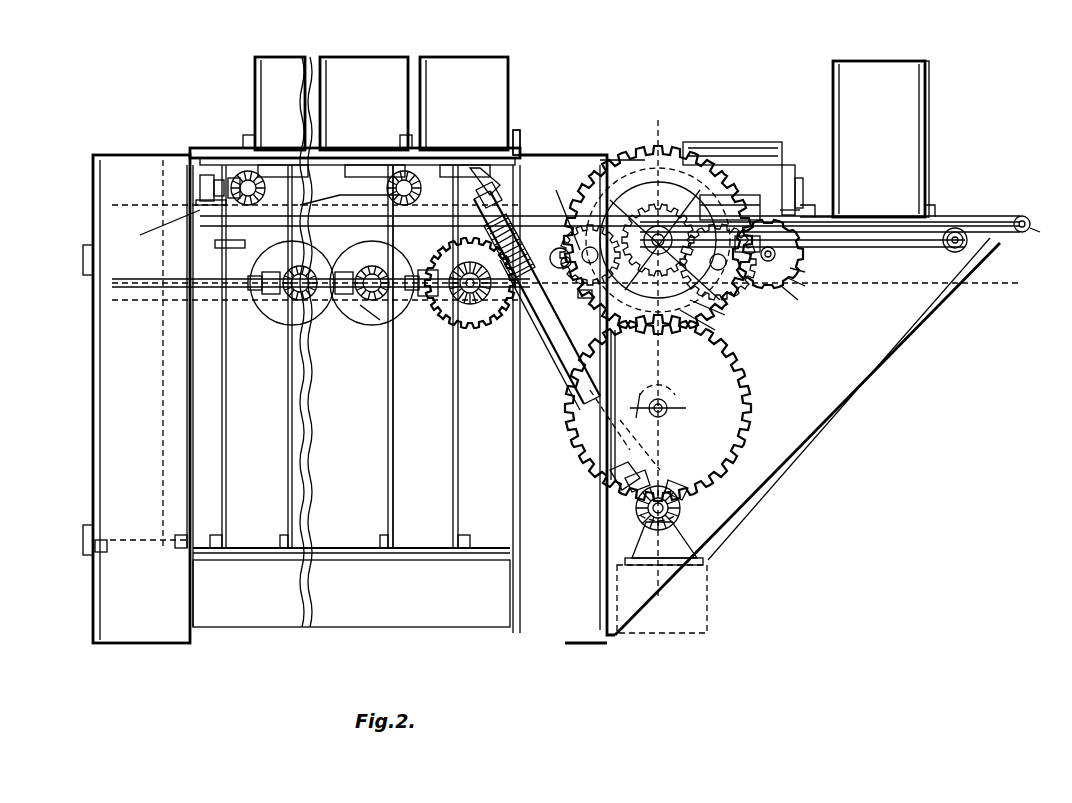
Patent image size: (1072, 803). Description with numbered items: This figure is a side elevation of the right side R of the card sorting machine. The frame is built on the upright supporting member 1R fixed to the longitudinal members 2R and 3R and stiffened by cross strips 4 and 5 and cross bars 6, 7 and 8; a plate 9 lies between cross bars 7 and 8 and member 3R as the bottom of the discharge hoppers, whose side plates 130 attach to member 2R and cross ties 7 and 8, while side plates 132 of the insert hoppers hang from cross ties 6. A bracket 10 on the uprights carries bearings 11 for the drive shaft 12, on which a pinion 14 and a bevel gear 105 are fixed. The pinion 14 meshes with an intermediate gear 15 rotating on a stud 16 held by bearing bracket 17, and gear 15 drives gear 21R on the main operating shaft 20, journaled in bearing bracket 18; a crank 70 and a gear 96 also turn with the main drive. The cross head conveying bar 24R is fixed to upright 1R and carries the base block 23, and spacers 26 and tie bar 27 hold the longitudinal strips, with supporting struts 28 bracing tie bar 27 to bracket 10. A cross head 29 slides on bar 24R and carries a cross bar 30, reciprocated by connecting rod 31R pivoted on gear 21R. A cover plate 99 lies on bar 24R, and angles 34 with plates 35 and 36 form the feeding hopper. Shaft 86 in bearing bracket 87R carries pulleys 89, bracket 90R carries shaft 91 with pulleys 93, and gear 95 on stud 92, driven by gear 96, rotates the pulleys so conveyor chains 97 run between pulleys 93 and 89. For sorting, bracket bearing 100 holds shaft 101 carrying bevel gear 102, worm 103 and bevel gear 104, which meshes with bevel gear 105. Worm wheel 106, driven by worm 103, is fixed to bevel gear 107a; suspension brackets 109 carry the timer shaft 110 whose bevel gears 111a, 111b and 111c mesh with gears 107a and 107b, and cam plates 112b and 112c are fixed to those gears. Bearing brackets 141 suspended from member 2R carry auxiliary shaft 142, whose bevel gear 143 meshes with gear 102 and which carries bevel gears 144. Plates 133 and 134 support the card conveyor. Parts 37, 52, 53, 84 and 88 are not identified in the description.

The supporting member 1R is at (118, 635).
The longitudinal member 2R is at (195, 152).
The longitudinal member 3R is at (218, 623).
The cross strip 4 is at (85, 262).
The cross strip 5 is at (520, 142).
The cross bar 6 is at (245, 140).
The cross bar 7 is at (476, 525).
The cross bar 8 is at (282, 538).
The plate 9 is at (438, 550).
The bracket 10 is at (665, 594).
The bearings 11 is at (676, 528).
The drive shaft 12 is at (636, 508).
The pinion 14 is at (650, 520).
The intermediate gear 15 is at (738, 445).
The stud 16 is at (664, 414).
The bearing bracket 17 is at (635, 405).
The bearing bracket 18 is at (658, 240).
The main operating shaft 20 is at (667, 241).
The gear 21R is at (628, 160).
The base block 23 is at (768, 254).
The cross head conveying bar 24R is at (600, 216).
The spacers 26 is at (1030, 222).
The tie bar 27 is at (1045, 239).
The supporting struts 28 is at (880, 372).
The cross head 29 is at (950, 224).
The cross bar 30 is at (948, 250).
The connecting rod 31R is at (890, 247).
The angles 34 is at (825, 196).
The plates 35 is at (918, 95).
The plates 36 is at (888, 66).
The lever 37 is at (810, 185).
The magnet 52 is at (732, 181).
The armature 53 is at (790, 170).
The crank 70 is at (730, 282).
The link 84 is at (561, 209).
The shaft 86 is at (808, 272).
The bearing bracket 87R is at (765, 245).
The block 88 is at (591, 305).
The pulleys 89 is at (807, 287).
The bracket 90R is at (630, 405).
The shaft 91 is at (561, 258).
The stud 92 is at (660, 330).
The pulleys 93 is at (560, 248).
The gear 95 is at (708, 326).
The gear 96 is at (718, 313).
The conveyor chains 97 is at (800, 299).
The cover plate 99 is at (790, 208).
The bracket bearing 100 is at (585, 392).
The shaft 101 is at (580, 385).
The bevel gear 102 is at (500, 186).
The worm gear 103 is at (515, 254).
The bevel gear 104 is at (628, 488).
The bevel gear 105 is at (682, 498).
The worm wheel 106 is at (490, 325).
The bevel gear 107a is at (472, 306).
The bevel gear 107b is at (395, 205).
The suspension brackets 109 is at (290, 235).
The timer shaft 110 is at (425, 300).
The bevel gear 111a is at (410, 300).
The bevel gear 111b is at (345, 310).
The bevel gear 111c is at (275, 285).
The cam plate 112b is at (382, 322).
The cam plate 112c is at (272, 300).
The side plates 130 is at (393, 425).
The side plates 132 is at (260, 90).
The plates 133 is at (180, 215).
The plates 134 is at (196, 202).
The bearing brackets 141 is at (198, 172).
The auxiliary shaft 142 is at (252, 205).
The bevel gear 143 is at (478, 168).
The bevel gears 144 is at (235, 200).
The frame R is at (575, 643).